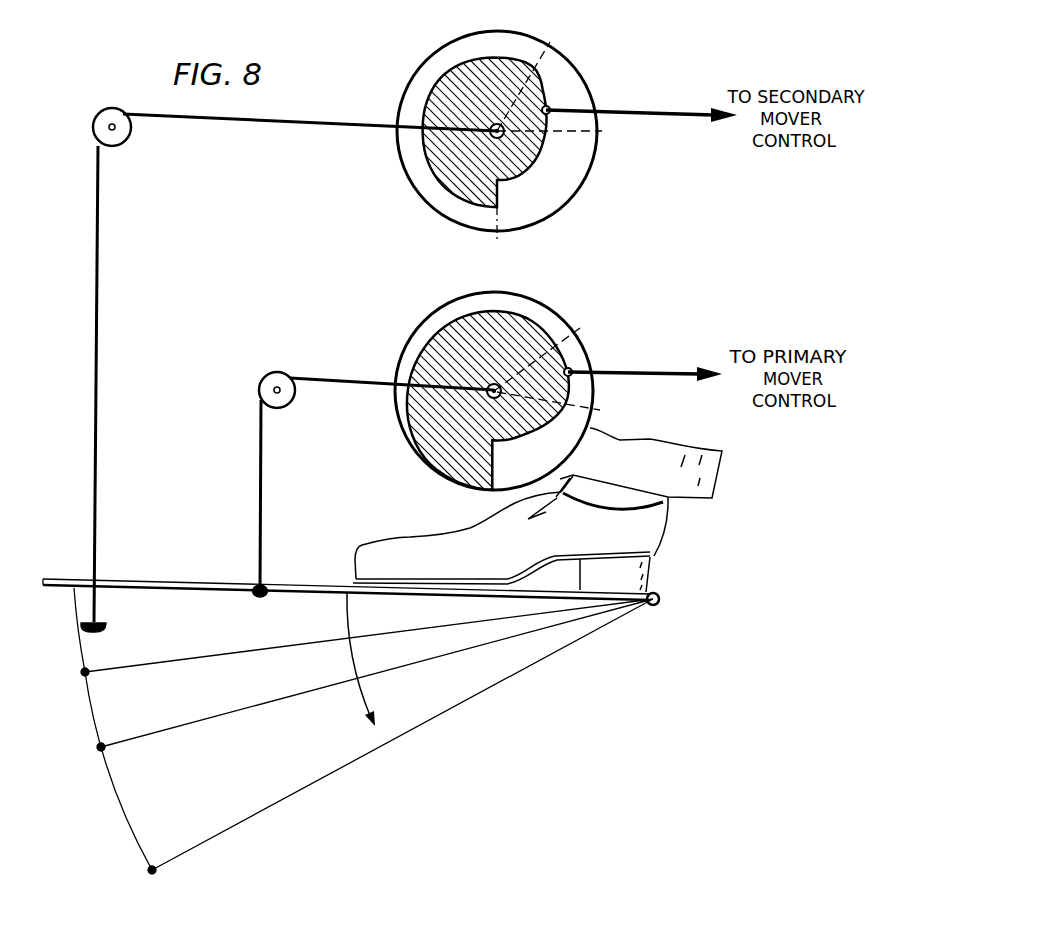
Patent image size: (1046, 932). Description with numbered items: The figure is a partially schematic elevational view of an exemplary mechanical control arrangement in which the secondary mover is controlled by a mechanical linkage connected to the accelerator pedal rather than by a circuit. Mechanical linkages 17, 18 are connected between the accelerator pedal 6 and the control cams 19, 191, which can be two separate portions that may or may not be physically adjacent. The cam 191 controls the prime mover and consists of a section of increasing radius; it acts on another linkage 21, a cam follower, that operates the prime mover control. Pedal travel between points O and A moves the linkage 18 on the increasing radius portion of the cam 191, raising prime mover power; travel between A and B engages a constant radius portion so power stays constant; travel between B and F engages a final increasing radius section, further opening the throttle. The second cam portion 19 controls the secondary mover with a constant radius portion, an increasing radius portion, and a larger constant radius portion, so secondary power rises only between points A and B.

The control cam 19 is at (460, 228).
The control cam 191 is at (522, 296).
The mechanical linkage 17 is at (99, 270).
The mechanical linkage 18 is at (262, 473).
The linkage 21 is at (627, 372).
The accelerator pedal 6 is at (351, 716).